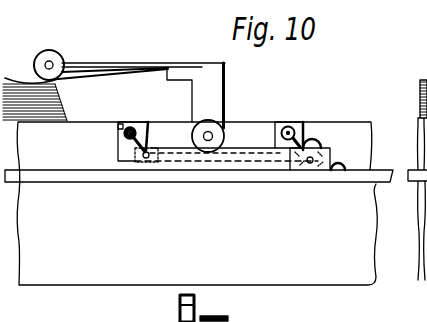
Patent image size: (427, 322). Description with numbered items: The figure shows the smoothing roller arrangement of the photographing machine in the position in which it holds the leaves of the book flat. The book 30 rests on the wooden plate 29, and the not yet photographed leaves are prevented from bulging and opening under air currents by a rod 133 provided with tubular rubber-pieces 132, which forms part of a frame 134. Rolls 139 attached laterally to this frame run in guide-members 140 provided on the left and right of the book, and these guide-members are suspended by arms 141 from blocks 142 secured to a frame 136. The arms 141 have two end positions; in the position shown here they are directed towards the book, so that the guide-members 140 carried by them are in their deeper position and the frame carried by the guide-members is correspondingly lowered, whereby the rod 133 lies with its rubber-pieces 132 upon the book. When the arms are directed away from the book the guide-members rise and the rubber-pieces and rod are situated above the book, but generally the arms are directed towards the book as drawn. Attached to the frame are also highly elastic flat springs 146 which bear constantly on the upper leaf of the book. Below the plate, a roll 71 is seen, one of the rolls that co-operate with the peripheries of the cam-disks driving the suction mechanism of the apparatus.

The wooden plate 29 is at (197, 203).
The book 30 is at (62, 108).
The rolls 71 is at (229, 318).
The tubular rubber-pieces 132 is at (48, 58).
The rod 133 is at (64, 57).
The frame 134 is at (113, 65).
The frame 136 is at (282, 175).
The rolls 139 is at (224, 125).
The guide-members 140 is at (117, 128).
The arms 141 is at (128, 137).
The blocks 142 is at (175, 163).
The flat springs 146 is at (135, 75).